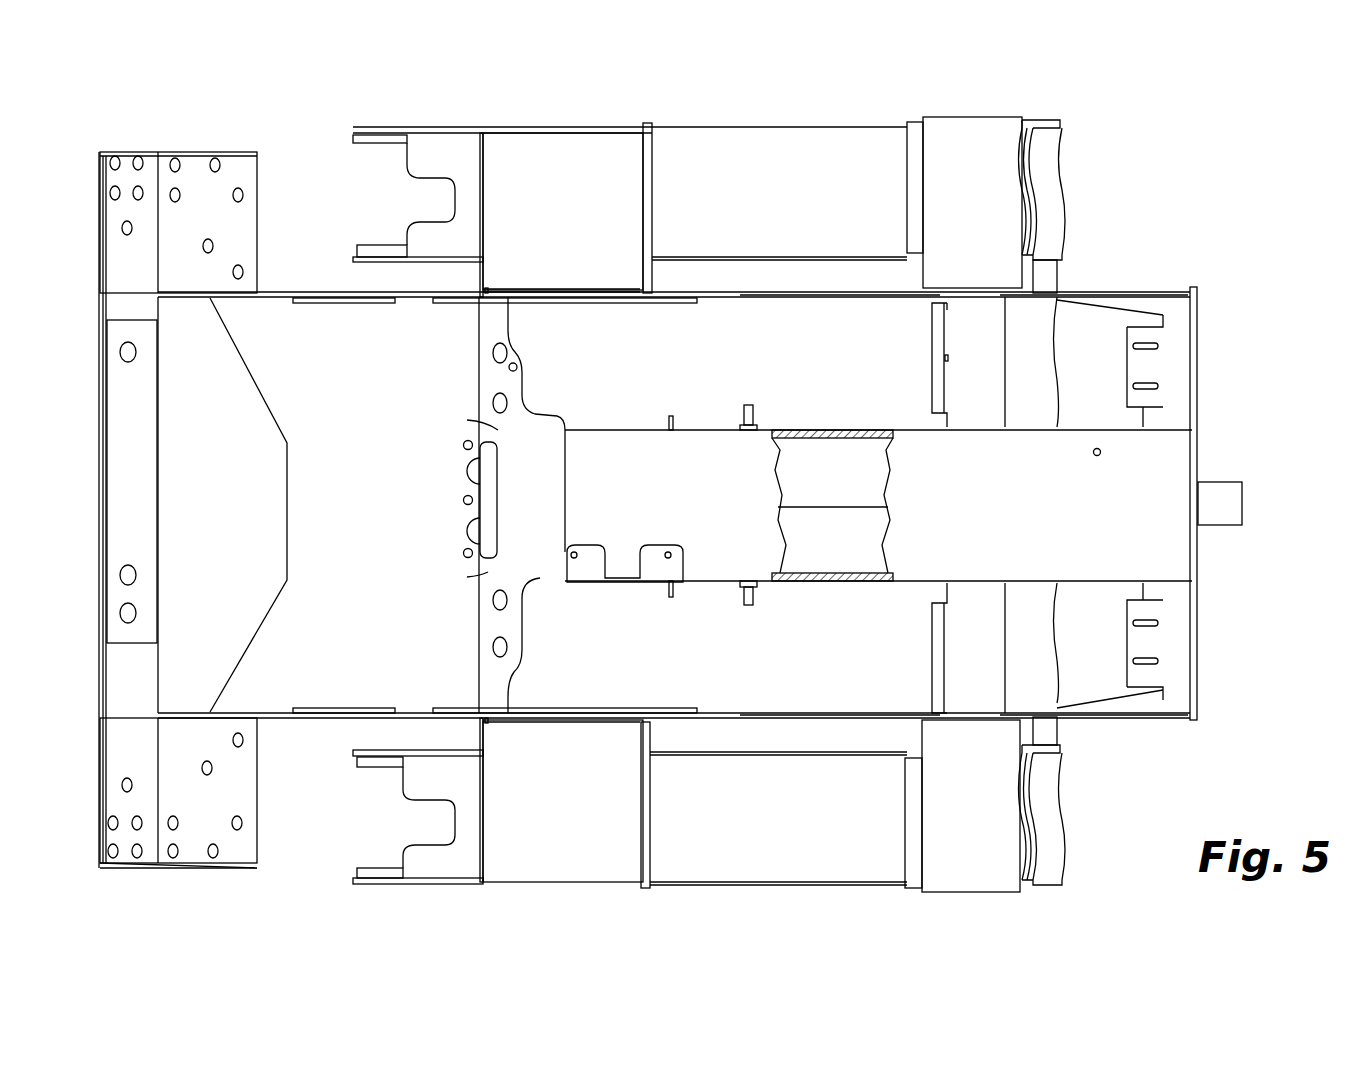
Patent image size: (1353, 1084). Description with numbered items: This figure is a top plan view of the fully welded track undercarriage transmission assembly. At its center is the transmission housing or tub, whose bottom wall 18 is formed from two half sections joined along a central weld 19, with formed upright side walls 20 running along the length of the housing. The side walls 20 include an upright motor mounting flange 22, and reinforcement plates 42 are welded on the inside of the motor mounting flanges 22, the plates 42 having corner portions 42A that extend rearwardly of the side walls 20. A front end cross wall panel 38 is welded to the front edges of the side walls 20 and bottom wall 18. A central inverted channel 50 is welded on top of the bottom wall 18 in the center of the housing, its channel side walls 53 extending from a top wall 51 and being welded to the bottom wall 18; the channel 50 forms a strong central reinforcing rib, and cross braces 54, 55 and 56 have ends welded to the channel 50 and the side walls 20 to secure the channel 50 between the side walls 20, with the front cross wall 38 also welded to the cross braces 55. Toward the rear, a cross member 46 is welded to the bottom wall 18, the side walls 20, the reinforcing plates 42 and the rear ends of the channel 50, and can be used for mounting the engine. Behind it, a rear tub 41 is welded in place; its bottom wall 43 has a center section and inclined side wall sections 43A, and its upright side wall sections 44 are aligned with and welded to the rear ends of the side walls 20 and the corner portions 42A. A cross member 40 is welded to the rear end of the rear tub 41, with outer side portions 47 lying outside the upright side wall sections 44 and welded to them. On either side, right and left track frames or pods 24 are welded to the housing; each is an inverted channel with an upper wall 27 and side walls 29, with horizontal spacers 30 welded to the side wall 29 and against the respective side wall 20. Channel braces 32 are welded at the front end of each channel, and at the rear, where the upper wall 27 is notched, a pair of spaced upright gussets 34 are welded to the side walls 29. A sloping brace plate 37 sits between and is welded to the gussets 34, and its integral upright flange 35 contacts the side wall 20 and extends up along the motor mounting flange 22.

The bottom wall 18 is at (826, 399).
The central weld 19 is at (858, 507).
The side walls 20 is at (766, 300).
The motor mounting flange 22 is at (568, 292).
The track frame 24 is at (832, 128).
The upper wall 27 is at (718, 150).
The side walls 29 is at (425, 132).
The spacers 30 is at (790, 275).
The channel braces 32 is at (985, 188).
The gussets 34 is at (485, 180).
The upright flange 35 is at (500, 290).
The brace plate 37 is at (577, 160).
The front end cross wall panel 38 is at (1200, 632).
The cross member 40 is at (135, 537).
The rear tub 41 is at (293, 655).
The reinforcement plates 42 is at (593, 303).
The corner portions 42A is at (457, 303).
The bottom wall 43 is at (351, 585).
The inclined side wall sections 43A is at (313, 387).
The upright side wall sections 44 is at (278, 293).
The cross member 46 is at (467, 577).
The outer side portions 47 is at (240, 212).
The central inverted channel 50 is at (1128, 473).
The top wall 51 is at (720, 570).
The channel side walls 53 is at (852, 430).
The cross brace 54 is at (960, 385).
The cross brace 55 is at (1178, 310).
The cross brace 56 is at (1095, 330).